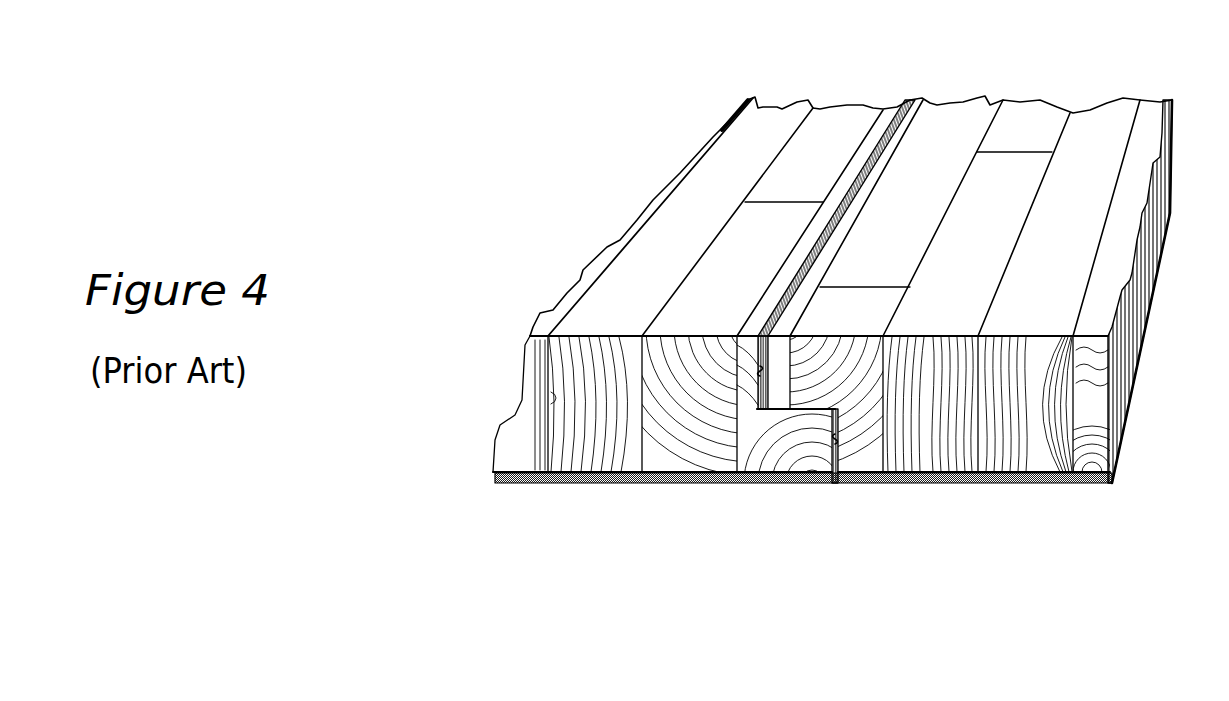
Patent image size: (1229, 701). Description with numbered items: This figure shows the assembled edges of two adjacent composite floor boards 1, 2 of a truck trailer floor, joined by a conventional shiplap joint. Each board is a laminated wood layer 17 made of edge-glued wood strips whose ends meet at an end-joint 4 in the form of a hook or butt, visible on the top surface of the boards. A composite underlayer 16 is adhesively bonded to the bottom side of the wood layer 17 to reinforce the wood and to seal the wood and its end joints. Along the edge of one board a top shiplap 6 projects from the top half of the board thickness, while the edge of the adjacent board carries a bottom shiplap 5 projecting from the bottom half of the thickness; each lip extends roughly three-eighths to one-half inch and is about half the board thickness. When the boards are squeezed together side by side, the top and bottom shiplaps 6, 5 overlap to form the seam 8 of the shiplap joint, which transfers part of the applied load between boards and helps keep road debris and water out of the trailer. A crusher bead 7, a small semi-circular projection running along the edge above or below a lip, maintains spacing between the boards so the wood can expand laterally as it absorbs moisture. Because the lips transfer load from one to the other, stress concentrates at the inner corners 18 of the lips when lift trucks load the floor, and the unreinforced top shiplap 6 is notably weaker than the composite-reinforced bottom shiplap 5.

The wood floor board 1 is at (568, 550).
The wood floor board 2 is at (1060, 547).
The end-joint 4 is at (818, 188).
The bottom shiplap 5 is at (812, 455).
The top shiplap 6 is at (800, 373).
The crusher bead 7 is at (848, 440).
The seam 8 is at (905, 92).
The composite underlayer 16 is at (653, 497).
The wood layer 17 is at (783, 96).
The inner corners 18 is at (748, 413).